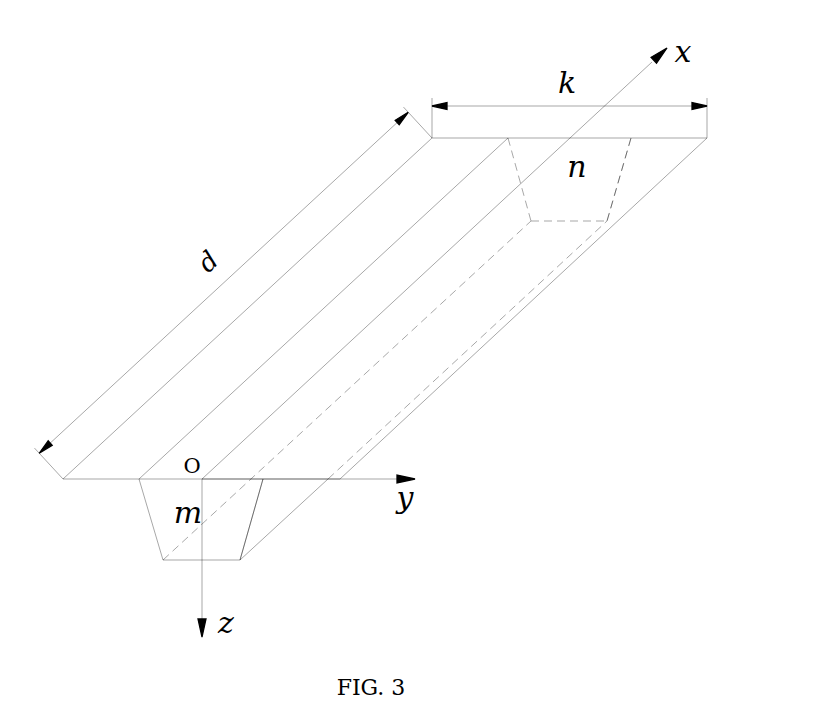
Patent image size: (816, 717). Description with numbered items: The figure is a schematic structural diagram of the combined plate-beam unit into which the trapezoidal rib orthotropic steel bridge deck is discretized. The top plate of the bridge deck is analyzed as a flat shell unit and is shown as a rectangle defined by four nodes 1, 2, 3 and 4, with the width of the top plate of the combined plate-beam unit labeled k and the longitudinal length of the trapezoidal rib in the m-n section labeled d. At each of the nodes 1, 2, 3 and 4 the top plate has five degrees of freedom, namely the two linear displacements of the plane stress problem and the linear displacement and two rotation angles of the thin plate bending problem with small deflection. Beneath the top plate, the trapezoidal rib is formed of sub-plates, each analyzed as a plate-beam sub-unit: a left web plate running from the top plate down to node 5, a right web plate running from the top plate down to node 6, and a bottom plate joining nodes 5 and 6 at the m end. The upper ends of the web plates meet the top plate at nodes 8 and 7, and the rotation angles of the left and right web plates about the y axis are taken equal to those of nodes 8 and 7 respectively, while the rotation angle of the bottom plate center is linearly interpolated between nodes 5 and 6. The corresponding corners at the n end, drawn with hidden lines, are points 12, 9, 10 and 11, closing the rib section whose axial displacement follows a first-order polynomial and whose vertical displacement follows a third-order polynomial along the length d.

The node 1 is at (244, 308).
The node 2 is at (569, 125).
The node 3 is at (523, 296).
The node 4 is at (221, 466).
The node 5 is at (189, 533).
The node 6 is at (282, 533).
The node 7 is at (266, 507).
The node 8 is at (316, 308).
The rear-left bottom corner of the trapezoidal groove 9 is at (385, 378).
The rear-right bottom corner of the trapezoidal groove 10 is at (479, 308).
The rear-right top edge point of the trapezoidal groove 11 is at (625, 166).
The rear-left top edge point of the trapezoidal groove 12 is at (515, 166).